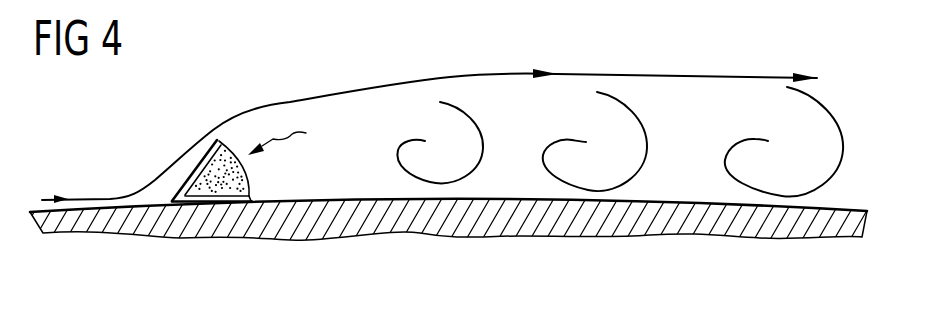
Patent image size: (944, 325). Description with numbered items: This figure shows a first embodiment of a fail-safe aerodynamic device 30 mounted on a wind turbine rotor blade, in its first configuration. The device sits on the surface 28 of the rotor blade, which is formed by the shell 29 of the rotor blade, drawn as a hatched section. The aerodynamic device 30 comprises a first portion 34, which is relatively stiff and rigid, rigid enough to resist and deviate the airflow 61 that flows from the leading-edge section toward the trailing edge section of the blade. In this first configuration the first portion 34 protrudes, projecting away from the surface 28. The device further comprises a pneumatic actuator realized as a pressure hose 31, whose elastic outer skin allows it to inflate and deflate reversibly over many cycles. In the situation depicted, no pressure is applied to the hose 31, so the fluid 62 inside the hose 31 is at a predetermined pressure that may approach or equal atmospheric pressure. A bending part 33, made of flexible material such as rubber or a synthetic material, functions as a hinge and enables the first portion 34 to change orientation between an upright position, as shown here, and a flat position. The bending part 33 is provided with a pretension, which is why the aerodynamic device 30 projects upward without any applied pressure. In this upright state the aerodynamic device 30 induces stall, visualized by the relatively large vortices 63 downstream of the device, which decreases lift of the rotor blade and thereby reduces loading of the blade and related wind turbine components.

The surface of the rotor blade 28 is at (662, 202).
The shell of the rotor blade 29 is at (488, 236).
The aerodynamic device 30 is at (292, 135).
The pressure hose 31 is at (227, 187).
The bending part 33 is at (179, 204).
The first portion 34 is at (193, 167).
The airflow 61 is at (368, 85).
The fluid 62 is at (243, 181).
The vortices 63 is at (469, 118).